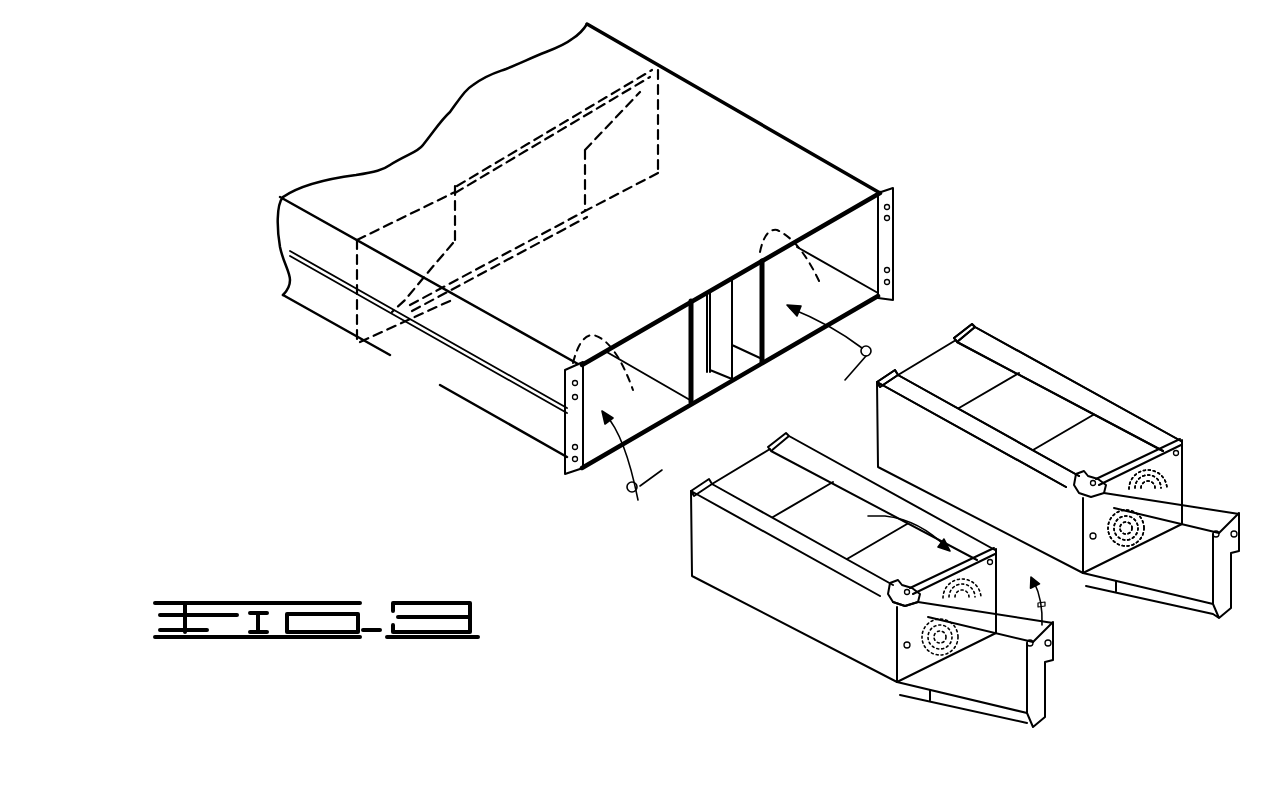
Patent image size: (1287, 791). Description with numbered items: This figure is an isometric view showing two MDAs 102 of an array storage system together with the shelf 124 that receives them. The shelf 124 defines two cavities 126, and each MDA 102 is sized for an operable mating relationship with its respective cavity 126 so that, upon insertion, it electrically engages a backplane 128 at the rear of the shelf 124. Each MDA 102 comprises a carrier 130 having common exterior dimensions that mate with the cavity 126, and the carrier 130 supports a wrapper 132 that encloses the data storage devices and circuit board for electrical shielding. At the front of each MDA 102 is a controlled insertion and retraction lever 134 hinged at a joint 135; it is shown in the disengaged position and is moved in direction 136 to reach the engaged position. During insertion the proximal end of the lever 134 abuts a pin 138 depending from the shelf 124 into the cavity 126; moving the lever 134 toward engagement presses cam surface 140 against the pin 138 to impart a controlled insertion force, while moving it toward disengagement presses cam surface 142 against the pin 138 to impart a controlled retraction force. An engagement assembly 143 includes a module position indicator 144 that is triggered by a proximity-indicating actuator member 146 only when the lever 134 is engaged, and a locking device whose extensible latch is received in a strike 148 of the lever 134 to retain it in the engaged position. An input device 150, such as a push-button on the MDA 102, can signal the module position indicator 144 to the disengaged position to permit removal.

The MDA 102 is at (1073, 378).
The shelf 124 is at (770, 130).
The cavity 126 is at (736, 402).
The backplane 128 is at (640, 62).
The carrier 130 is at (1000, 356).
The wrapper 132 is at (1168, 483).
The lever 134 is at (1000, 634).
The joint 135 is at (905, 588).
The direction 136 is at (1069, 612).
The pin 138 is at (710, 327).
The cam surface 140 is at (885, 587).
The cam surface 142 is at (872, 596).
The engagement assembly 143 is at (886, 527).
The module position indicator 144 is at (1000, 562).
The actuator member 146 is at (1031, 648).
The strike 148 is at (1050, 647).
The input device 150 is at (904, 648).